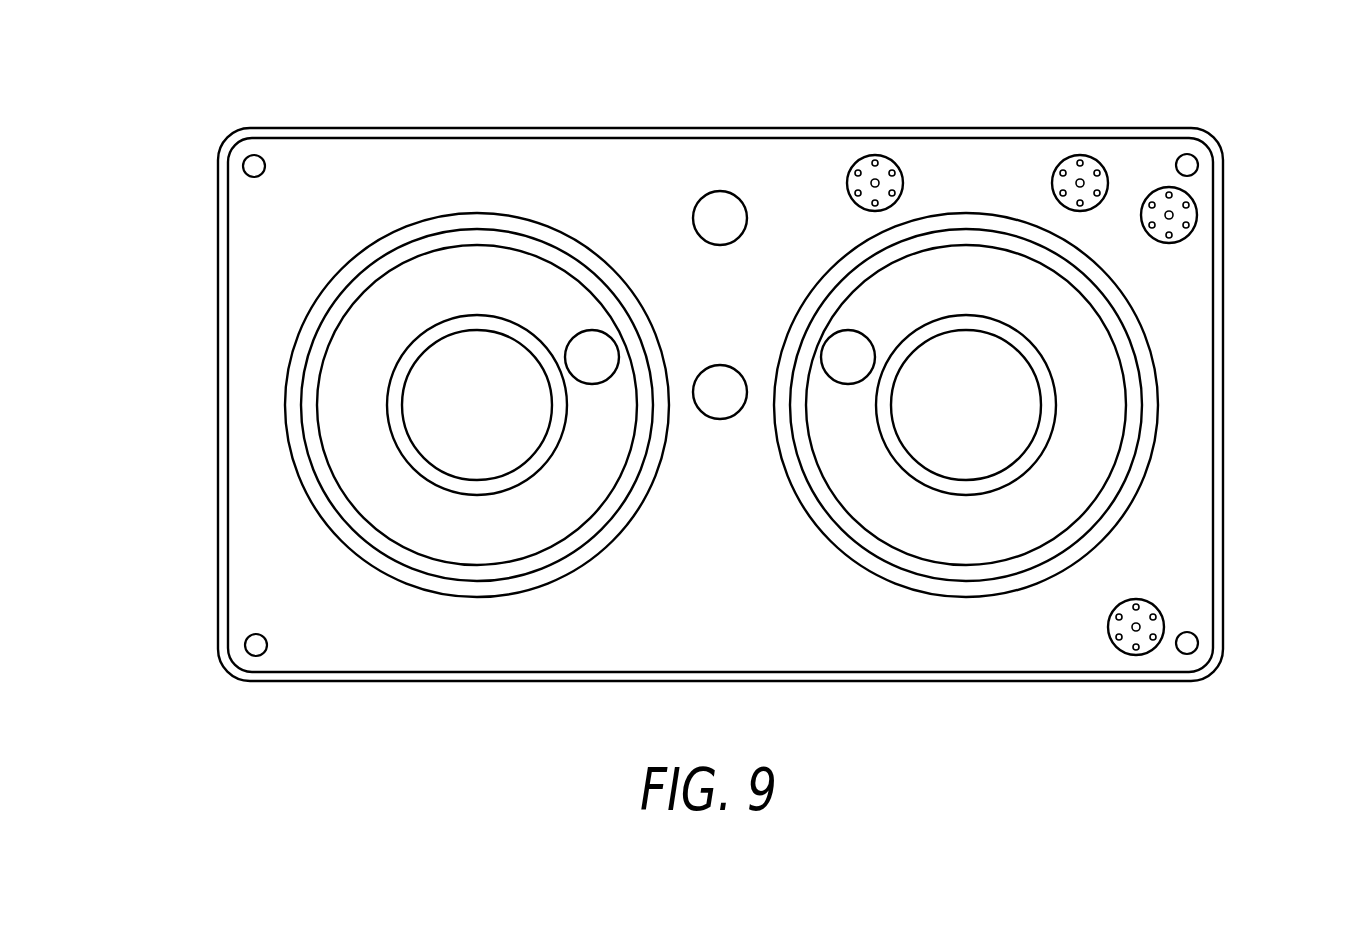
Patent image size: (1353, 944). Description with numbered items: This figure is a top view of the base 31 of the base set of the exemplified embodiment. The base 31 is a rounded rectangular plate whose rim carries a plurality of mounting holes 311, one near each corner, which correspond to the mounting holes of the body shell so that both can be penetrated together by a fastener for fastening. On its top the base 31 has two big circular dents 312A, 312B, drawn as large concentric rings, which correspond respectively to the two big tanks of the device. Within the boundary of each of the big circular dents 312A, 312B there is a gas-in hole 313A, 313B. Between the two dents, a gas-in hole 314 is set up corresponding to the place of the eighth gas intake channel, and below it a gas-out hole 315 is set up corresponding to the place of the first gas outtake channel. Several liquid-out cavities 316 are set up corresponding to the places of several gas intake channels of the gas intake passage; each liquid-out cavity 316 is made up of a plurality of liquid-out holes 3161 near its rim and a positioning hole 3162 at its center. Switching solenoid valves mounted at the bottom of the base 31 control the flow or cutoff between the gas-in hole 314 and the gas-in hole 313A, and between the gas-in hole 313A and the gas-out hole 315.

The base 31 is at (1218, 387).
The mounting holes 311 is at (1189, 164).
The big circular dent 312A is at (338, 412).
The big circular dent 312B is at (1107, 445).
The gas-in hole 313A is at (587, 350).
The gas-in hole 313B is at (842, 347).
The gas-in hole 314 is at (719, 218).
The gas-out hole 315 is at (718, 405).
The liquid-out cavity 316 is at (860, 163).
The liquid-out holes 3161 is at (876, 162).
The positioning hole 3162 is at (877, 183).